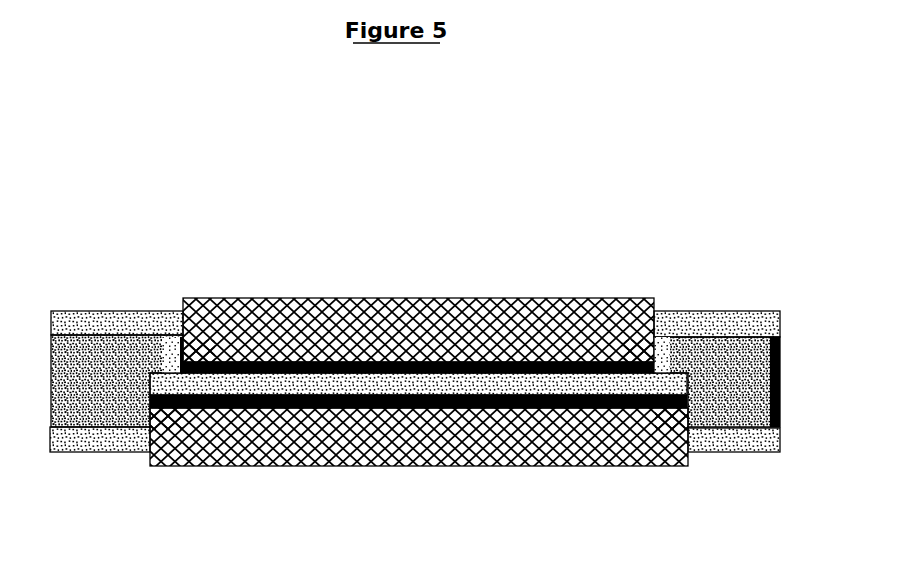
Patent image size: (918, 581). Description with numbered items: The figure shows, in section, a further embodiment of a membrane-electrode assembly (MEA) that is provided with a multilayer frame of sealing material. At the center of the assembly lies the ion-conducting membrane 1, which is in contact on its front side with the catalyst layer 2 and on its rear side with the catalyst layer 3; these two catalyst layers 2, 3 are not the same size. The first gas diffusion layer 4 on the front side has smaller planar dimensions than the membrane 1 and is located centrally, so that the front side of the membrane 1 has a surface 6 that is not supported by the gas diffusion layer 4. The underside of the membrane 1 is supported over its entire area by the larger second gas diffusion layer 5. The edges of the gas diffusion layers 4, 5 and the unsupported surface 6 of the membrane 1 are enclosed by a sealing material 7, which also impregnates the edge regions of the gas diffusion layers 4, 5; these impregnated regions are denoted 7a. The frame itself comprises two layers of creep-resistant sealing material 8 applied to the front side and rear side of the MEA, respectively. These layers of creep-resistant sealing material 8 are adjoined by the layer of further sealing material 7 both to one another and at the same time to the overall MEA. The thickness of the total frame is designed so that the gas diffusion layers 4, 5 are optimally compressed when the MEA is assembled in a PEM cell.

The ion-conducting membrane 1 is at (253, 362).
The catalyst layer 2 is at (496, 378).
The catalyst layer 3 is at (560, 403).
The first gas diffusion layer 4 is at (447, 337).
The second gas diffusion layer 5 is at (432, 420).
The surface 6 is at (165, 358).
The sealing material 7 is at (122, 357).
The impregnated region of the gas diffusion layer 7a is at (213, 357).
The creep-resistant sealing material 8 is at (88, 323).